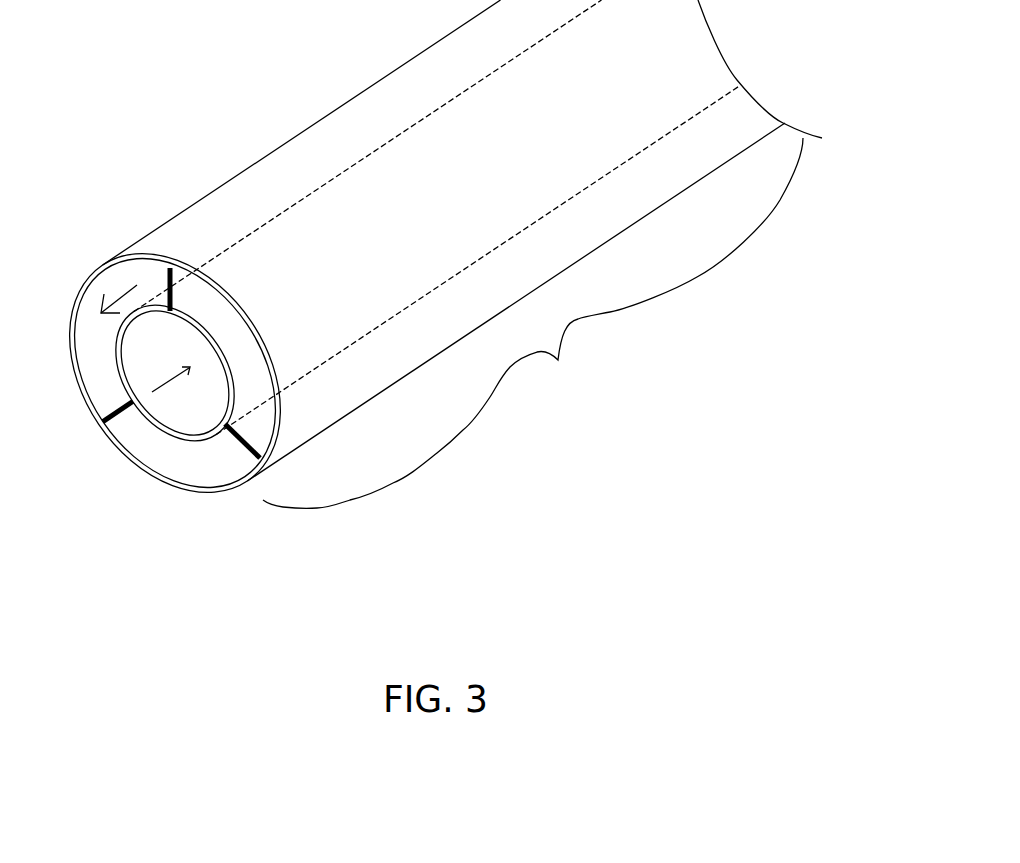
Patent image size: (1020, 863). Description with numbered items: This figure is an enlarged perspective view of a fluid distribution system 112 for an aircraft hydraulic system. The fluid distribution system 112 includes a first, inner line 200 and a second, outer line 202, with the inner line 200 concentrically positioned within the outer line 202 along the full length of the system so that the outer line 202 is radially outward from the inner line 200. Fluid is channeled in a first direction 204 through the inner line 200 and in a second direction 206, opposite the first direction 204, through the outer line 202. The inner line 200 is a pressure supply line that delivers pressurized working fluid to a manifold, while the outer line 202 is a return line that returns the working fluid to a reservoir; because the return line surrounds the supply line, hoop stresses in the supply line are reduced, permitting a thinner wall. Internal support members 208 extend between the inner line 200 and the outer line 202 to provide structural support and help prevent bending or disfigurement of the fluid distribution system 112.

The fluid distribution system 112 is at (233, 46).
The inner line 200 is at (100, 385).
The outer line 202 is at (100, 428).
The first direction 204 is at (182, 393).
The second direction 206 is at (118, 296).
The internal support members 208 is at (126, 250).